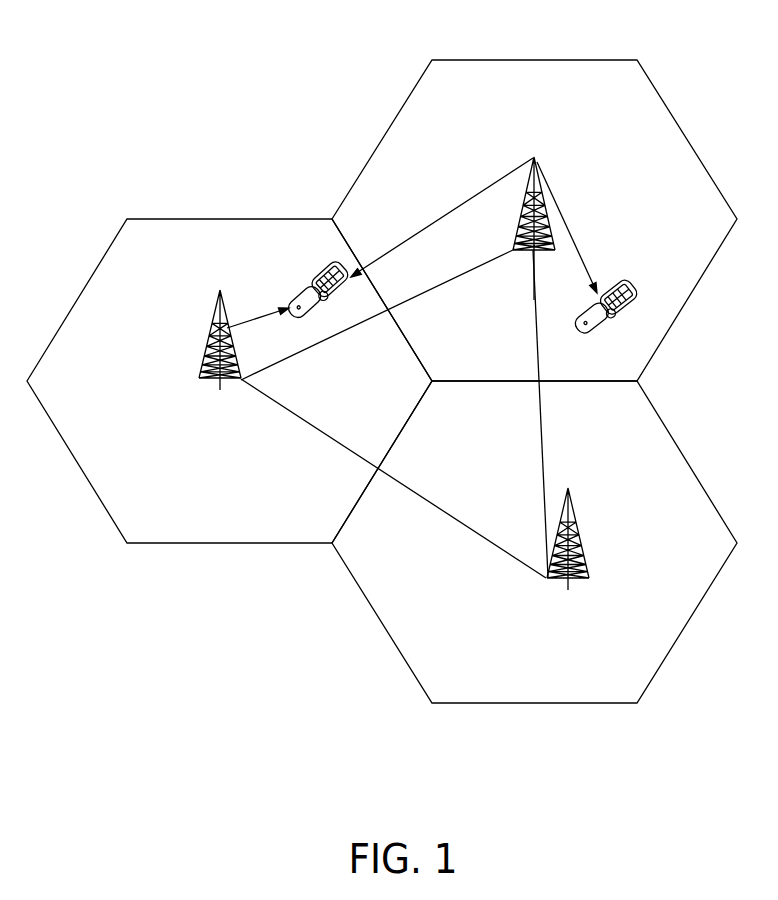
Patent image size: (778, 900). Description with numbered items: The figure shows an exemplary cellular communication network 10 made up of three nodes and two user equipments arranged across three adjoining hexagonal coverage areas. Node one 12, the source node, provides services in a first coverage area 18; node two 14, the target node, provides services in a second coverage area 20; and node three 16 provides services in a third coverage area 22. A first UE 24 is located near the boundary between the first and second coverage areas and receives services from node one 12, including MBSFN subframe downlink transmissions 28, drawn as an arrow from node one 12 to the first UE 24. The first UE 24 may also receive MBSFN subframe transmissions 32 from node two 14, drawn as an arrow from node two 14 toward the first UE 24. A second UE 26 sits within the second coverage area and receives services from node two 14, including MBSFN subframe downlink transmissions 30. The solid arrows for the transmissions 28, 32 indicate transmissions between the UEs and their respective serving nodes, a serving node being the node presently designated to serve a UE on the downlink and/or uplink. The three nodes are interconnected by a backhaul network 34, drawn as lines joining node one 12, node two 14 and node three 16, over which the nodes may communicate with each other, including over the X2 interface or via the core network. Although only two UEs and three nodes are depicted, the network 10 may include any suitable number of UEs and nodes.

The cellular communication network 10 is at (139, 108).
The node one 12 is at (210, 327).
The node two 14 is at (520, 222).
The node three 16 is at (580, 533).
The first coverage area 18 is at (245, 228).
The second coverage area 20 is at (580, 70).
The third coverage area 22 is at (665, 650).
The first UE 24 is at (312, 283).
The second UE 26 is at (625, 286).
The MBSFN subframe downlink transmissions 28 is at (255, 312).
The MBSFN subframe downlink transmissions 30 is at (580, 238).
The MBSFN subframe transmissions 32 is at (443, 213).
The backhaul network 34 is at (342, 333).